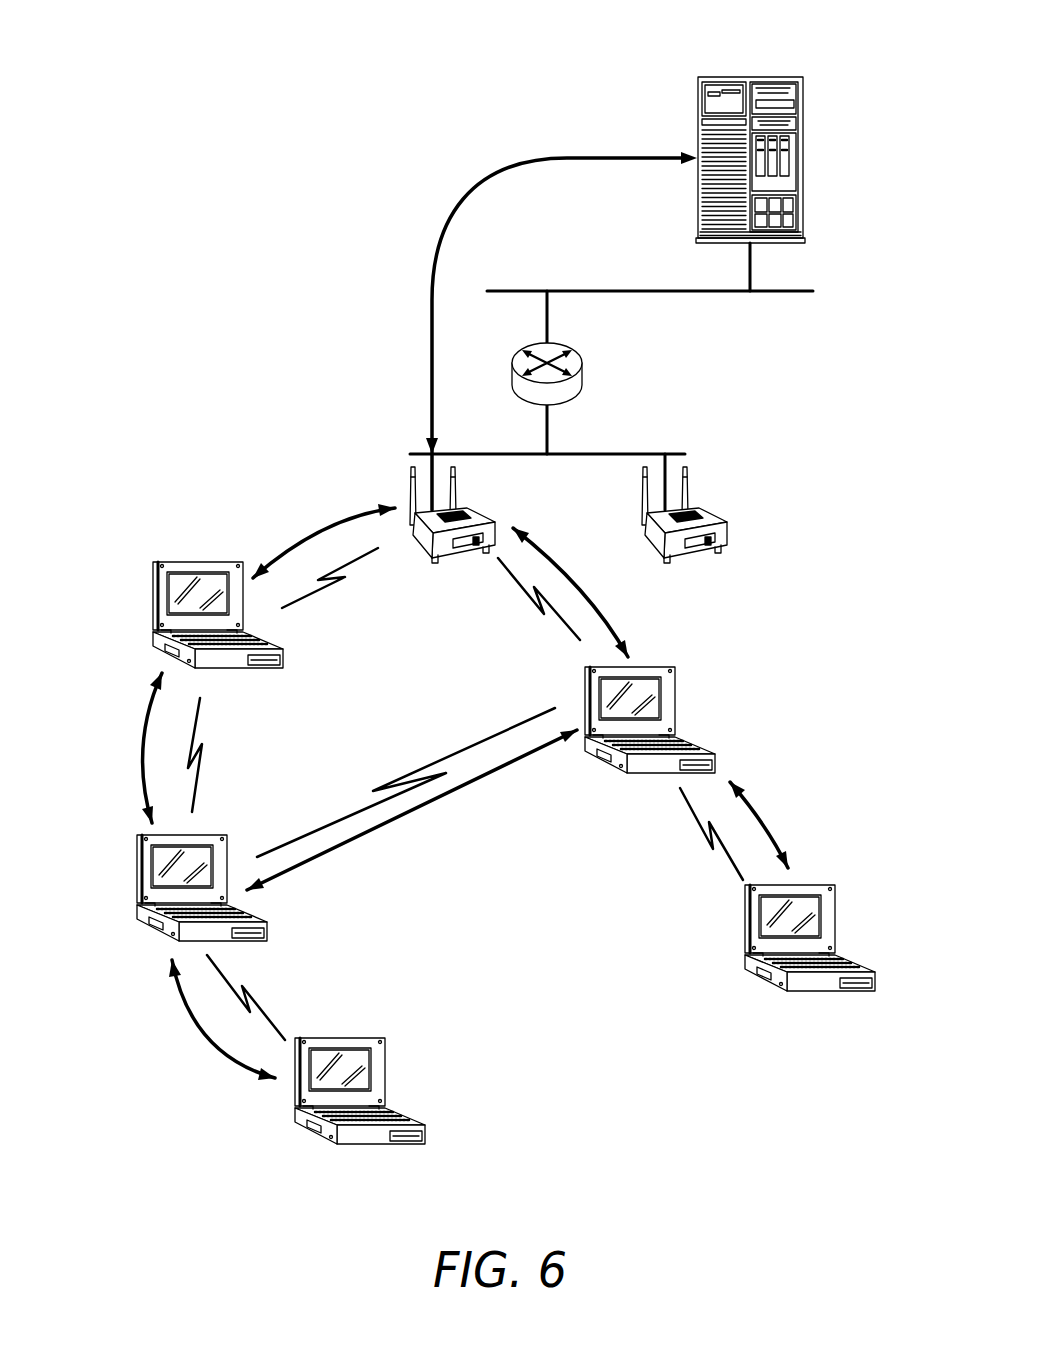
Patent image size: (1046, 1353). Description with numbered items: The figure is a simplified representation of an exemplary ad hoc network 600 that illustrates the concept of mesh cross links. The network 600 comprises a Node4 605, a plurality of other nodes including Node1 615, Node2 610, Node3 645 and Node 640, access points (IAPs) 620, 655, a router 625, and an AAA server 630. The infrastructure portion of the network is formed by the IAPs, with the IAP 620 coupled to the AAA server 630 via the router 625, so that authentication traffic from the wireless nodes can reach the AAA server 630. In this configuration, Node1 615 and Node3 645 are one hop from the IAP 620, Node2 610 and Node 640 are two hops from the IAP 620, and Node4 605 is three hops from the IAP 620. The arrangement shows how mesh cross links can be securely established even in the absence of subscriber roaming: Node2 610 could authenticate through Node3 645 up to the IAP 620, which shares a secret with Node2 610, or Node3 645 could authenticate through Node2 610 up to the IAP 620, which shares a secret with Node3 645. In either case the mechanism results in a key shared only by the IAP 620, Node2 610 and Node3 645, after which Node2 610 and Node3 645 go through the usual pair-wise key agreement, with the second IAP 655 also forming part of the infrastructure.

The ad hoc network 600 is at (423, 42).
The Node4 605 is at (383, 1073).
The Node2 610 is at (137, 872).
The Node1 615 is at (171, 562).
The access point (IAP) 620 is at (482, 515).
The router 625 is at (584, 375).
The AAA server 630 is at (715, 77).
The Node5 640 is at (835, 918).
The Node3 645 is at (657, 668).
The access point (IAP) 655 is at (715, 515).